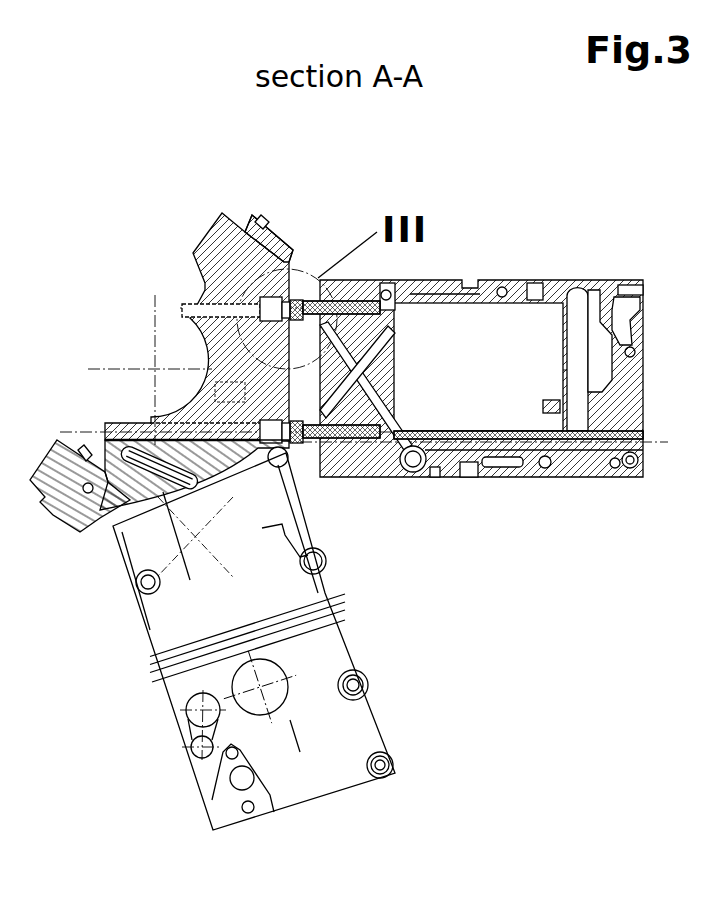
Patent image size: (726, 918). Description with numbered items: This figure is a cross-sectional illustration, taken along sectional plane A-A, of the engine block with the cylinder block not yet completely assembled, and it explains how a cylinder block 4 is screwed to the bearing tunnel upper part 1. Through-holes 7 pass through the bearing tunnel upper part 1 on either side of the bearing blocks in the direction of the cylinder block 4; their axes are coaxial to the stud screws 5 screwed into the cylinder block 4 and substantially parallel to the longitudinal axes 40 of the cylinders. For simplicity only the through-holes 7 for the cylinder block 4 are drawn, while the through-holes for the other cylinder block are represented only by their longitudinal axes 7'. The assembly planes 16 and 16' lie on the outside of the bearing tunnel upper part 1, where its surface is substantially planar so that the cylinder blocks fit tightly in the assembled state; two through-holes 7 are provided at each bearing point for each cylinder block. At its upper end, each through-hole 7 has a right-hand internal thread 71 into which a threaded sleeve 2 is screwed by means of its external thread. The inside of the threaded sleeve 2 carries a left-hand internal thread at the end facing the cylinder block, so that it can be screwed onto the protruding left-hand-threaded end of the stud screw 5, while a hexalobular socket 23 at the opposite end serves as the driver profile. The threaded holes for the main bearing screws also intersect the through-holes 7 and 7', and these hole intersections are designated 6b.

The bearing tunnel upper part 1 is at (199, 293).
The internal thread 71 is at (221, 204).
The hexalobular socket 23 is at (238, 188).
The threaded sleeve 2 is at (281, 295).
The stud screw 5 is at (341, 309).
The cylinder block 4 is at (481, 330).
The longitudinal axis of the cylinder 40 is at (509, 419).
The through-hole 7 is at (161, 315).
The longitudinal axis of the through-hole 7' is at (146, 316).
The hole intersection 6b is at (150, 429).
The assembly plane 16 is at (256, 641).
The assembly plane 16' is at (231, 547).